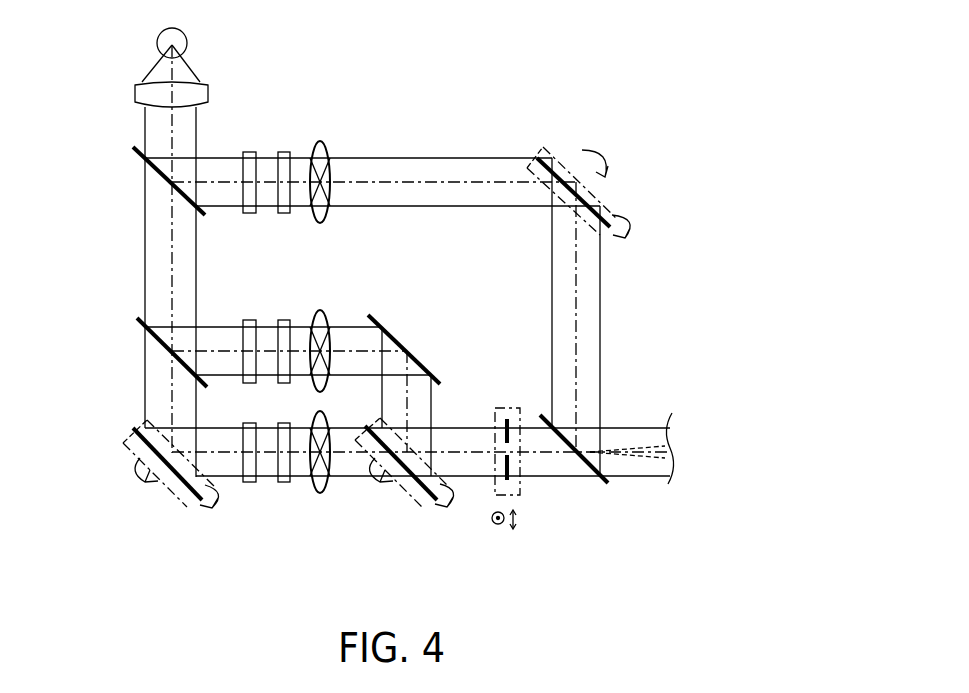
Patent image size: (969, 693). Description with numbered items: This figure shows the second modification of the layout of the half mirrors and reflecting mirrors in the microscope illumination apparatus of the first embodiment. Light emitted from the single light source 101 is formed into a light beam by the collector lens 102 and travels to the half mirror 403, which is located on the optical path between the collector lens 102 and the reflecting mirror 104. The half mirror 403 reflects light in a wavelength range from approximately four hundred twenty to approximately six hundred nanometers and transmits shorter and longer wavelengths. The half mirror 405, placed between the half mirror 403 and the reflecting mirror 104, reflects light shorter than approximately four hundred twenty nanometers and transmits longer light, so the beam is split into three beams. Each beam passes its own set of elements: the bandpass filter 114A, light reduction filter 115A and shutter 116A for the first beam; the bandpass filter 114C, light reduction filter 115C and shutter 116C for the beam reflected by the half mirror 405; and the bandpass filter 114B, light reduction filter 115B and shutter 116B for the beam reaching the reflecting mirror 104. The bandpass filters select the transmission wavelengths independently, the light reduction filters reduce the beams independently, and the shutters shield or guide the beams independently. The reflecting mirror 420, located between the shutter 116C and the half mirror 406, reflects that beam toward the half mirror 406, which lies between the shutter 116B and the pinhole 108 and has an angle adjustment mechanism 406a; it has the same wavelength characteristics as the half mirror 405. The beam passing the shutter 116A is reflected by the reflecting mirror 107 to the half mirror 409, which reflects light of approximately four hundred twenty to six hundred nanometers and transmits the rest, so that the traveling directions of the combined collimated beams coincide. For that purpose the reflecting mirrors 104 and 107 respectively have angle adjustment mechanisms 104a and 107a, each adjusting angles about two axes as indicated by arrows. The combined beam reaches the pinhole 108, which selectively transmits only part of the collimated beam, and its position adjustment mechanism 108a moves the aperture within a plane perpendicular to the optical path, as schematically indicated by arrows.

The light source 101 is at (157, 46).
The collector lens 102 is at (135, 93).
The half mirror 403 is at (140, 155).
The half mirror 405 is at (145, 322).
The reflecting mirror 104 is at (130, 425).
The angle adjustment mechanism 104a is at (183, 487).
The half mirror 406 is at (370, 423).
The angle adjustment mechanism 406a is at (430, 505).
The reflecting mirror 420 is at (378, 313).
The reflecting mirror 107 is at (547, 150).
The angle adjustment mechanism 107a is at (612, 190).
The half mirror 409 is at (608, 480).
The pinhole 108 is at (522, 487).
The position adjustment mechanism 108a is at (507, 407).
The bandpass filter 114A is at (248, 152).
The light reduction filter 115A is at (282, 152).
The shutter 116A is at (322, 146).
The bandpass filter 114C is at (250, 320).
The light reduction filter 115C is at (283, 320).
The shutter 116C is at (322, 315).
The bandpass filter 114B is at (250, 484).
The light reduction filter 115B is at (285, 485).
The shutter 116B is at (327, 485).